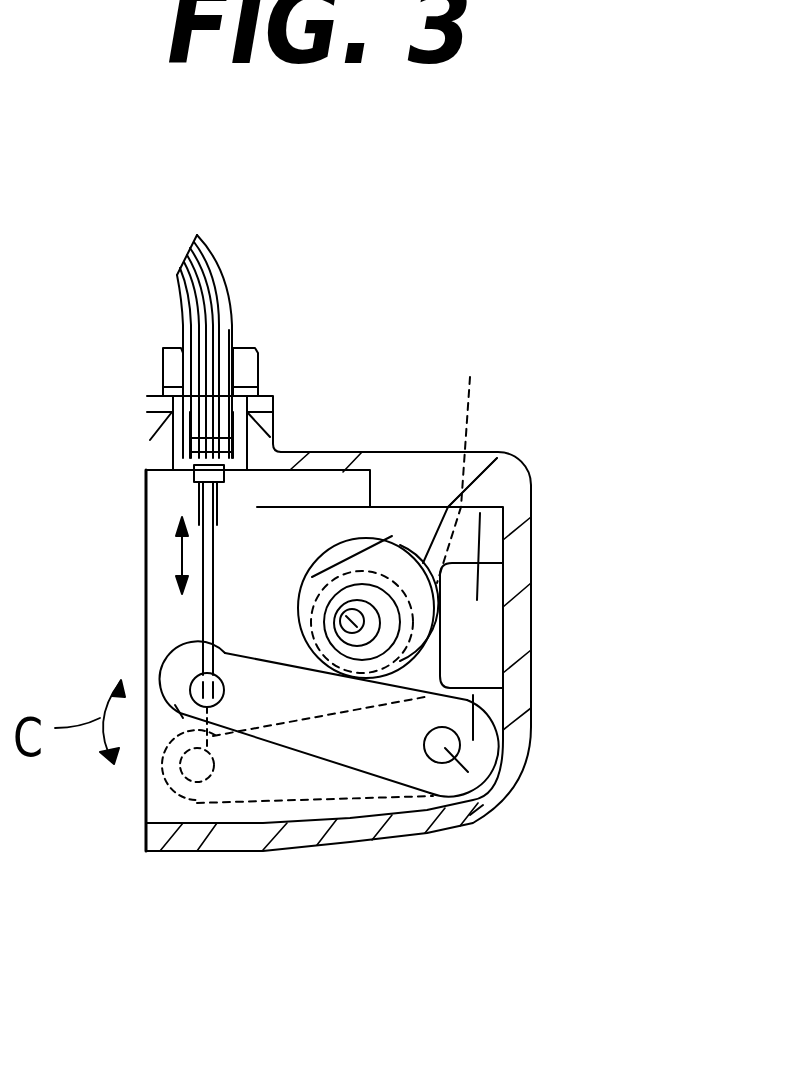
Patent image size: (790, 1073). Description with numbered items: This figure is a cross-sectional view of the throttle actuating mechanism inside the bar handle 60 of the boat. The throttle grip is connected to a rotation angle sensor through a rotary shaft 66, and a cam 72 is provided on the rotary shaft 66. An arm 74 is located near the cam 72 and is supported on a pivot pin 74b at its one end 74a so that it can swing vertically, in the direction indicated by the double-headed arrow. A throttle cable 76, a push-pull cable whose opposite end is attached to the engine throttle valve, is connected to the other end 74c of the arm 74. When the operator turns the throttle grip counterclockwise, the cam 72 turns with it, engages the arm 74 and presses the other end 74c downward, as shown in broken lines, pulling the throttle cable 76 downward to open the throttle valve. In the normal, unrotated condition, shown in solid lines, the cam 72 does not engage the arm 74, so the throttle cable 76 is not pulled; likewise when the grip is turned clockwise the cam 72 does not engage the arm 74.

The bar handle 60 is at (531, 455).
The rotary shaft 66 is at (321, 572).
The cam 72 is at (367, 540).
The arm 74 is at (368, 814).
The one end of the arm 74a is at (470, 732).
The pivot pin 74b is at (483, 807).
The other end of the arm 74c is at (180, 717).
The throttle cable 76 is at (217, 297).